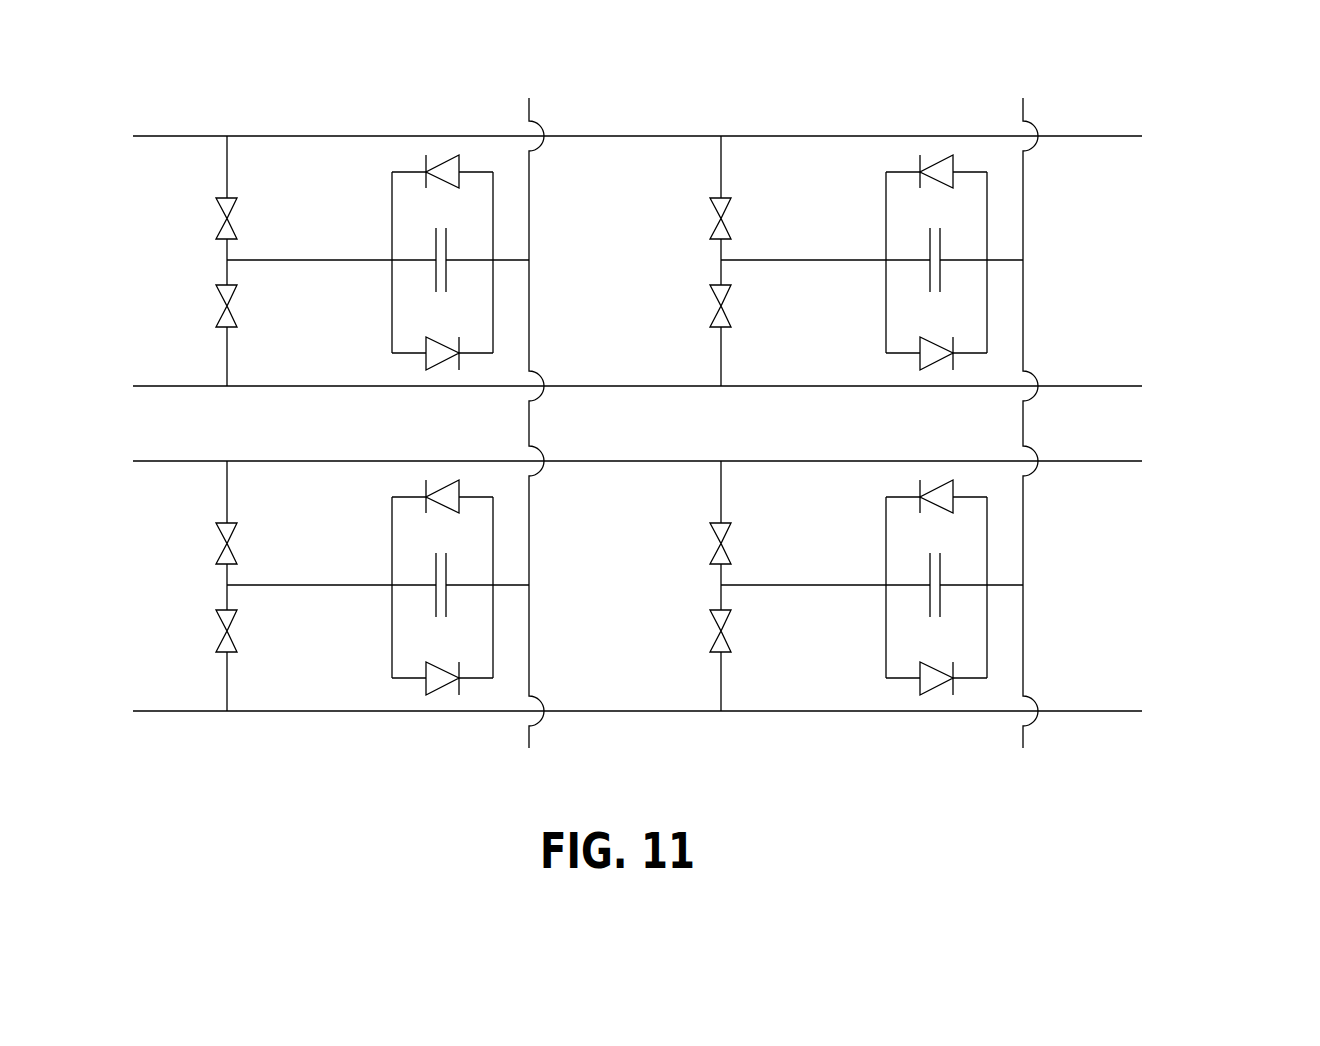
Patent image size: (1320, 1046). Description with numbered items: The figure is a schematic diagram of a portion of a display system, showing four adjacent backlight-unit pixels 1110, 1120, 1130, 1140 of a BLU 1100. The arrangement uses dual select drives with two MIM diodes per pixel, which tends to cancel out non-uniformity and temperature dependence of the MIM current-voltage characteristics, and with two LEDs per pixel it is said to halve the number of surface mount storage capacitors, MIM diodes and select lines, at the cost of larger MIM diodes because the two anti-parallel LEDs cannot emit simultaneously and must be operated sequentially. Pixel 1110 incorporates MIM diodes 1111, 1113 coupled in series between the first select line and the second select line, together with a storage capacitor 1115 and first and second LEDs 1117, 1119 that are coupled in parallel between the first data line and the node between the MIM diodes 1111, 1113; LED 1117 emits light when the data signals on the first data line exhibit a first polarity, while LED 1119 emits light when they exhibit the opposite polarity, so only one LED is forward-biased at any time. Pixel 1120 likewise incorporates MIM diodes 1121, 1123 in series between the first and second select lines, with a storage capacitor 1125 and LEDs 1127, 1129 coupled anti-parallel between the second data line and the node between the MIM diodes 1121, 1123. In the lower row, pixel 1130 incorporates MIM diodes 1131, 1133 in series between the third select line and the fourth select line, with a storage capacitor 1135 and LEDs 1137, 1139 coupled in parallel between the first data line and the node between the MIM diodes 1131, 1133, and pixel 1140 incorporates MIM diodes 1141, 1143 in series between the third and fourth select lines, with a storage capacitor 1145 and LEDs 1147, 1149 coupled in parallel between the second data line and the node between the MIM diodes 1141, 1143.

The BLU 1100 is at (1207, 160).
The pixel 1110 is at (377, 105).
The pixel 1120 is at (871, 105).
The pixel 1130 is at (363, 742).
The pixel 1140 is at (857, 742).
The MIM diode 1111 is at (212, 218).
The MIM diode 1113 is at (212, 306).
The storage capacitor 1115 is at (423, 272).
The first LED 1117 is at (417, 357).
The second LED 1119 is at (410, 161).
The MIM diode 1121 is at (706, 218).
The MIM diode 1123 is at (706, 306).
The storage capacitor 1125 is at (917, 272).
The LED 1127 is at (911, 357).
The LED 1129 is at (904, 161).
The MIM diode 1131 is at (212, 543).
The MIM diode 1133 is at (212, 631).
The storage capacitor 1135 is at (423, 597).
The LED 1137 is at (417, 682).
The LED 1139 is at (410, 486).
The MIM diode 1141 is at (706, 543).
The MIM diode 1143 is at (706, 631).
The storage capacitor 1145 is at (917, 597).
The LED 1147 is at (911, 682).
The LED 1149 is at (904, 486).